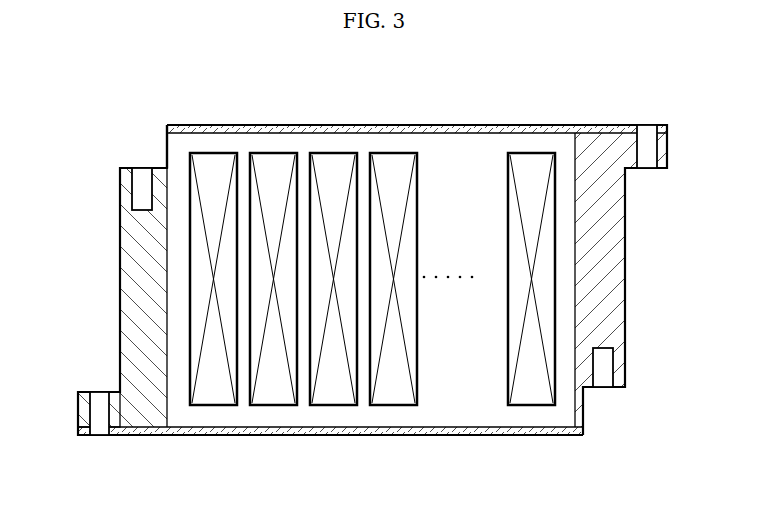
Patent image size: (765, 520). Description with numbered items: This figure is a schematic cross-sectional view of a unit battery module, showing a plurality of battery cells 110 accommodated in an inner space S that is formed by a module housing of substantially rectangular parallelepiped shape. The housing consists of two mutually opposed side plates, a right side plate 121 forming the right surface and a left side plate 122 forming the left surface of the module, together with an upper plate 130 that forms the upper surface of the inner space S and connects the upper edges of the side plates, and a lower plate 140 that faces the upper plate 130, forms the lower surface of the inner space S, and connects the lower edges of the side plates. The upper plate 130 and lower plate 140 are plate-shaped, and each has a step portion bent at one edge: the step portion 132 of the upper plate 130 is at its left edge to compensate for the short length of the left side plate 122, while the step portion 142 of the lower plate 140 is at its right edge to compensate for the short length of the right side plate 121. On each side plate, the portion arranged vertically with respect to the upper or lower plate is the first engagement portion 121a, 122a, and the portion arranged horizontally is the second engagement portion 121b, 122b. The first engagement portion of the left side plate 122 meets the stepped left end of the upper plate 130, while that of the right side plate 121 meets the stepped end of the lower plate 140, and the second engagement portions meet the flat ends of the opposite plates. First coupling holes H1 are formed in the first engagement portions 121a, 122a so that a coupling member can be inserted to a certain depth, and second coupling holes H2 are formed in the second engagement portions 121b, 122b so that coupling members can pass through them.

The battery cells 110 is at (274, 170).
The right side plate 121 is at (637, 262).
The first engagement portion 121a is at (610, 205).
The second engagement portion 121b is at (600, 144).
The left side plate 122 is at (110, 268).
The first engagement portion 122a is at (135, 318).
The second engagement portion 122b is at (141, 413).
The upper plate 130 is at (371, 128).
The step portion 132 is at (164, 138).
The lower plate 140 is at (370, 435).
The step portion 142 is at (585, 410).
The first coupling hole H1 is at (141, 189).
The second coupling hole H2 is at (99, 414).
The inner space S is at (473, 183).